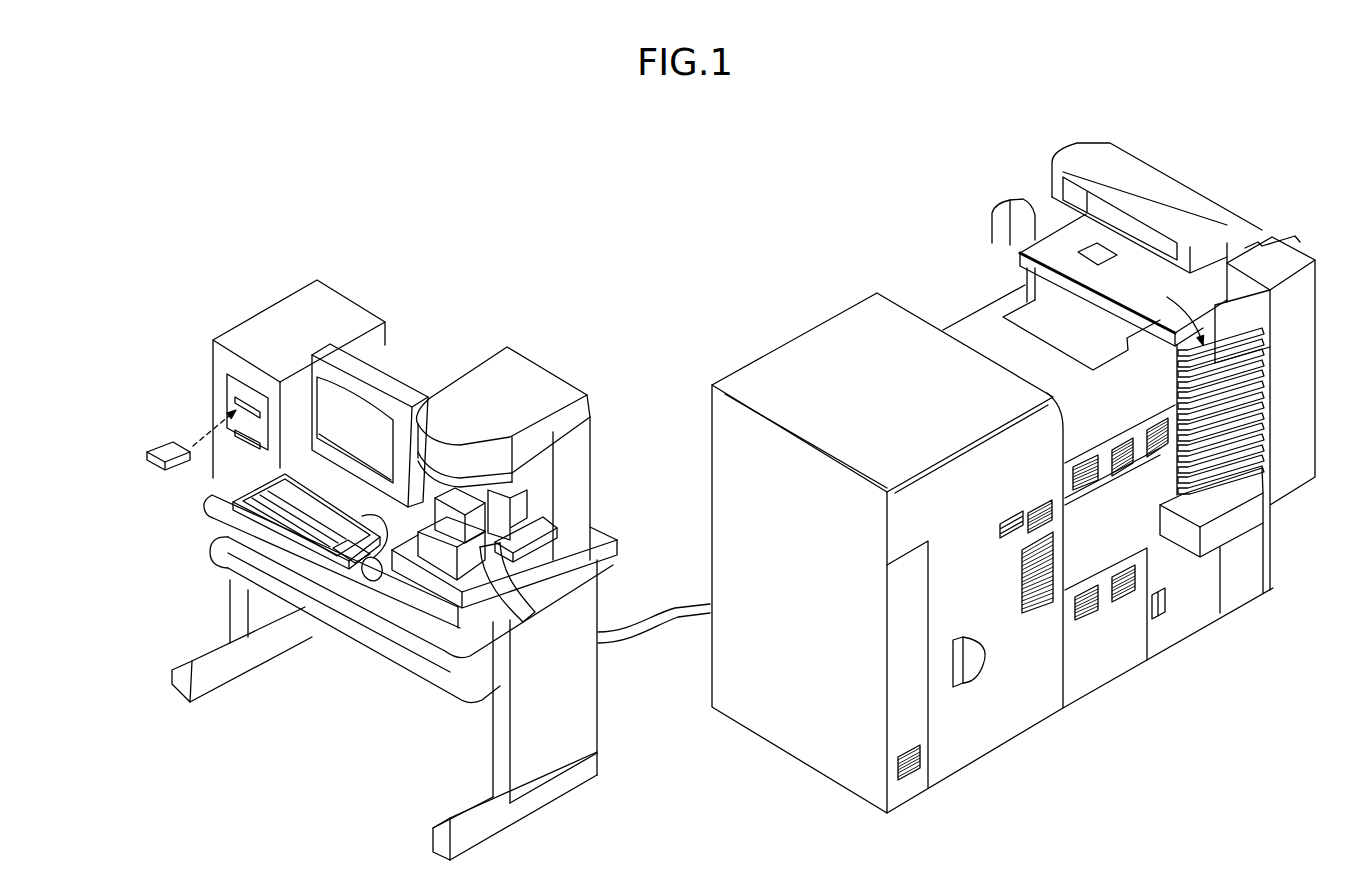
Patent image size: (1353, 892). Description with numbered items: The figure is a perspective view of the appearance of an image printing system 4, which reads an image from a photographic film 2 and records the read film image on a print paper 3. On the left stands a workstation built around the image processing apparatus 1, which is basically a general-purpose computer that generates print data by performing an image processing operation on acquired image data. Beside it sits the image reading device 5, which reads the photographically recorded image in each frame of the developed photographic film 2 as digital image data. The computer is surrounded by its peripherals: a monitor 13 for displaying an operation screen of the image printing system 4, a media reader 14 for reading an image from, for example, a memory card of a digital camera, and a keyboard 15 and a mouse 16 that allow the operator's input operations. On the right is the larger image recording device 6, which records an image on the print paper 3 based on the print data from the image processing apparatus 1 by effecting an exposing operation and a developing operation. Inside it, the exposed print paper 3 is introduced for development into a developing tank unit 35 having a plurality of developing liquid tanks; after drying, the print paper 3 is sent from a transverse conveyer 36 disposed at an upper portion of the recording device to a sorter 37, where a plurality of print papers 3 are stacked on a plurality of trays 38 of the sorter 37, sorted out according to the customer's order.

The image processing apparatus 1 is at (270, 325).
The photographic film 2 is at (533, 608).
The print paper 3 is at (1095, 258).
The image printing system 4 is at (631, 248).
The image reading device 5 is at (527, 383).
The image recording device 6 is at (825, 282).
The monitor 13 is at (417, 343).
The media reader 14 is at (225, 397).
The keyboard 15 is at (260, 518).
The mouse 16 is at (370, 582).
The developing tank unit 35 is at (1120, 643).
The transverse conveyer 36 is at (1057, 250).
The sorter 37 is at (1274, 243).
The trays 38 is at (1170, 412).